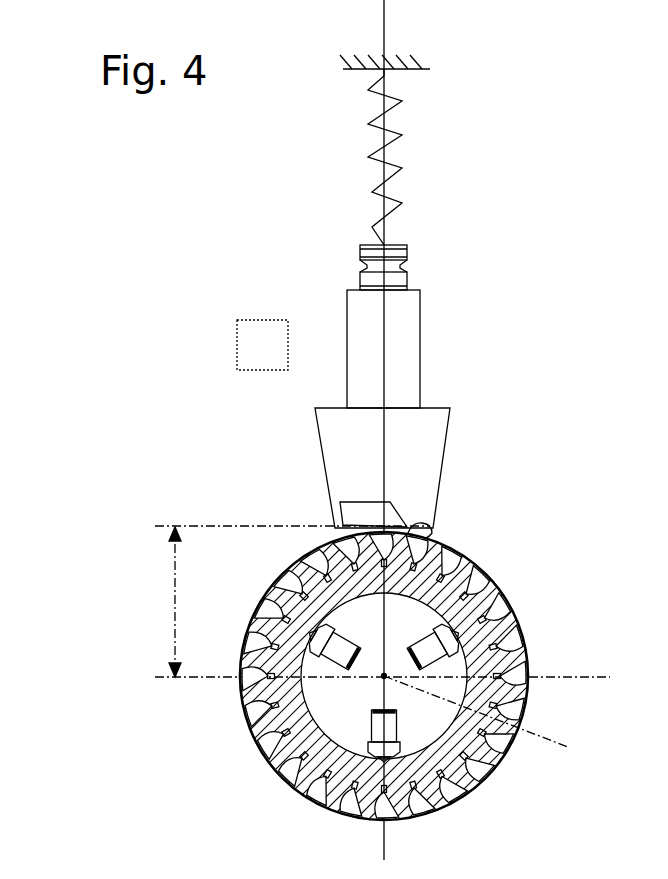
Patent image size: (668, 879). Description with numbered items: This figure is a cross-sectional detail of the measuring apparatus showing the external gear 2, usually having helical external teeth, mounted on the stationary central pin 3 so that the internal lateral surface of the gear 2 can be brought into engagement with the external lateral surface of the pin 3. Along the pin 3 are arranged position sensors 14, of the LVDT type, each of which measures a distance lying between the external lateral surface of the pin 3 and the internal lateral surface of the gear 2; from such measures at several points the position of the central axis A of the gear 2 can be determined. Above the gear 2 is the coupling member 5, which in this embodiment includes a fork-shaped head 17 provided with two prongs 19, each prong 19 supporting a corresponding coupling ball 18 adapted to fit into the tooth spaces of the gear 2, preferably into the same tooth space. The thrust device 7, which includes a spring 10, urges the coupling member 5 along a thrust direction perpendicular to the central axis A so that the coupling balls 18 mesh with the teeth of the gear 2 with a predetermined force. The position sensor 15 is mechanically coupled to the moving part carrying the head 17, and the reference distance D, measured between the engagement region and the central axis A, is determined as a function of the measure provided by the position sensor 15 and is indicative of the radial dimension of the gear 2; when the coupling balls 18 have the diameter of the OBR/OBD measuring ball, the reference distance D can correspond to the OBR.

The external gear 2 is at (552, 580).
The stationary central pin 3 is at (352, 710).
The coupling member 5 is at (505, 369).
The thrust device 7 is at (480, 147).
The spring 10 is at (372, 192).
The position sensor 14 is at (387, 730).
The position sensor 15 is at (336, 347).
The head 17 is at (432, 452).
The coupling ball 18 is at (425, 535).
The prong 19 is at (423, 513).
The reference distance D is at (182, 602).
The central axis A is at (485, 719).